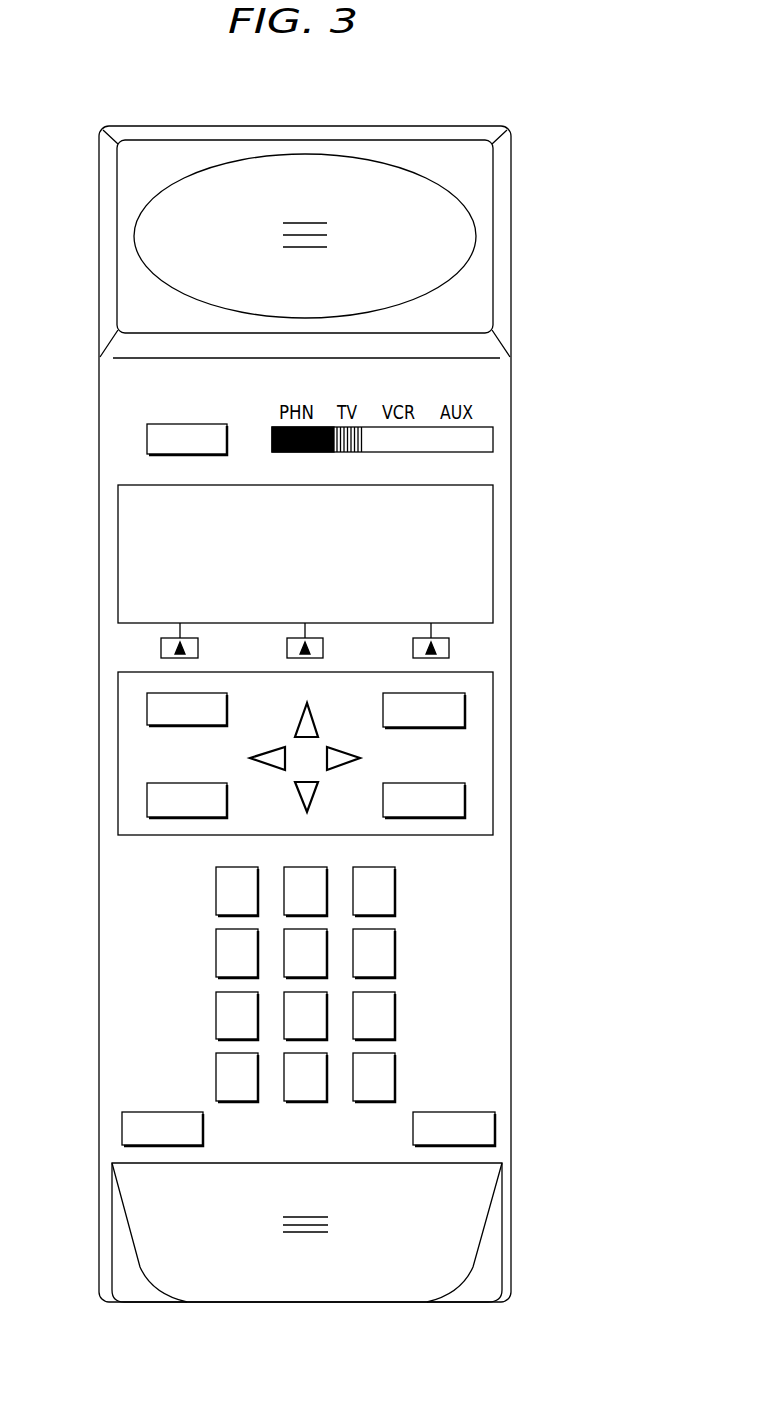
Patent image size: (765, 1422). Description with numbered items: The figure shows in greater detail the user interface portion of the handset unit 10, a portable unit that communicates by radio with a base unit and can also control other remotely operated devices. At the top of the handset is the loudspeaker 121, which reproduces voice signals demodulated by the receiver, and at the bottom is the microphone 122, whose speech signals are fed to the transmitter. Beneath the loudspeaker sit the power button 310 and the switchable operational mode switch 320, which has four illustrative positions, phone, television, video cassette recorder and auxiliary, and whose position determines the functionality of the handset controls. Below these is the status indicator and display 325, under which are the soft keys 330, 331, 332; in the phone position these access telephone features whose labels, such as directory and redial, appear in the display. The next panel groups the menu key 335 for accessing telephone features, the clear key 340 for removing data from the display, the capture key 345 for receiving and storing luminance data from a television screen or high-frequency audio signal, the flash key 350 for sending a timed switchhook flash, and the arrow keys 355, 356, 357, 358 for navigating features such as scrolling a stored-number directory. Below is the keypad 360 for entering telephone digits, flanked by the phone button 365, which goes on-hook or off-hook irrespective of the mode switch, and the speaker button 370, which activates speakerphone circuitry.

The handset unit 10 is at (467, 70).
The loudspeaker 121 is at (303, 220).
The microphone 122 is at (323, 1237).
The power button 310 is at (190, 427).
The operational mode switch 320 is at (410, 388).
The status indicator and display 325 is at (482, 565).
The soft key 330 is at (198, 649).
The soft key 331 is at (323, 649).
The soft key 332 is at (449, 649).
The menu key 335 is at (147, 707).
The clear key 340 is at (147, 800).
The capture key 345 is at (465, 710).
The flash key 350 is at (465, 803).
The arrow key 355 is at (302, 720).
The arrow key 356 is at (268, 757).
The arrow key 357 is at (341, 750).
The arrow key 358 is at (312, 793).
The keypad 360 is at (397, 850).
The phone button 365 is at (122, 1127).
The speaker button 370 is at (495, 1130).